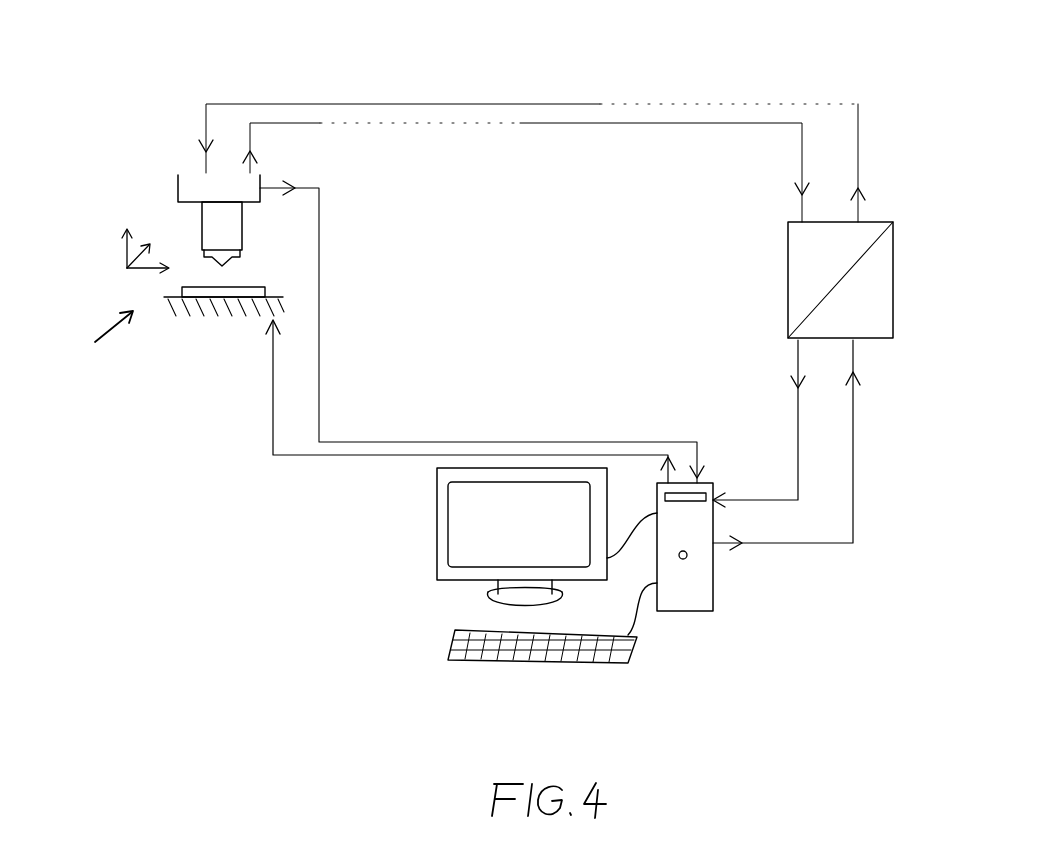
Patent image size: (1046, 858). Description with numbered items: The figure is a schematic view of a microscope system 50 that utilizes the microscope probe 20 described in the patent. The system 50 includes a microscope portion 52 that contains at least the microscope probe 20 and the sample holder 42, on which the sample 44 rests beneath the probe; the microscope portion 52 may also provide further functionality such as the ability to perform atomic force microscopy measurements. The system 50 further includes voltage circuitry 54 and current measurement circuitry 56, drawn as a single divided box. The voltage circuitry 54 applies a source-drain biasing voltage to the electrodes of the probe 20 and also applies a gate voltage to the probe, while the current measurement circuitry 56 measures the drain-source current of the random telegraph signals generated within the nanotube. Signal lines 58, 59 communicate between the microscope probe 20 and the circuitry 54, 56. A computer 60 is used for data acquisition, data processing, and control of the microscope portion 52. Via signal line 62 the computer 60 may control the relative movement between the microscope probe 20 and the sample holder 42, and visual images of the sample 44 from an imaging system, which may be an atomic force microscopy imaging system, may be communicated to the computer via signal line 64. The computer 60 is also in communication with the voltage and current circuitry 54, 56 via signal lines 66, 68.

The microscope probe 20 is at (201, 223).
The sample holder 42 is at (199, 312).
The sample 44 is at (247, 297).
The microscope system 50 is at (568, 52).
The microscope portion 52 is at (95, 339).
The voltage circuitry 54 is at (797, 253).
The current measurement circuitry 56 is at (883, 297).
The signal line 58 is at (523, 123).
The signal line 59 is at (585, 104).
The computer 60 is at (713, 594).
The signal line 62 is at (377, 455).
The signal line 64 is at (455, 440).
The signal line 66 is at (855, 470).
The signal line 68 is at (798, 418).